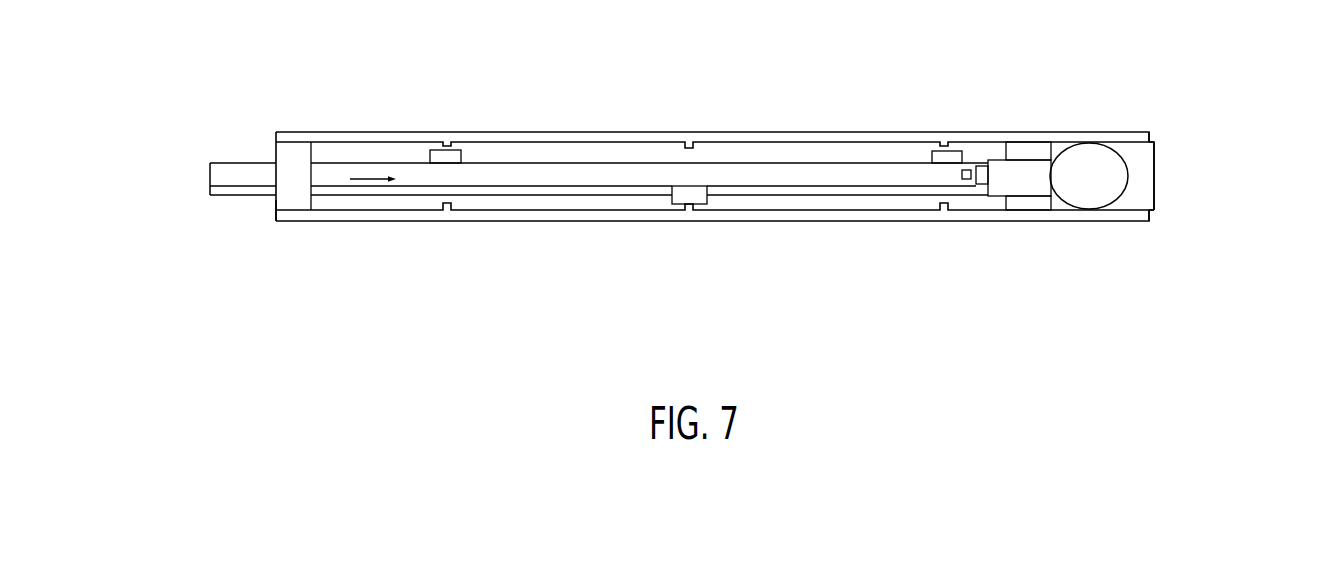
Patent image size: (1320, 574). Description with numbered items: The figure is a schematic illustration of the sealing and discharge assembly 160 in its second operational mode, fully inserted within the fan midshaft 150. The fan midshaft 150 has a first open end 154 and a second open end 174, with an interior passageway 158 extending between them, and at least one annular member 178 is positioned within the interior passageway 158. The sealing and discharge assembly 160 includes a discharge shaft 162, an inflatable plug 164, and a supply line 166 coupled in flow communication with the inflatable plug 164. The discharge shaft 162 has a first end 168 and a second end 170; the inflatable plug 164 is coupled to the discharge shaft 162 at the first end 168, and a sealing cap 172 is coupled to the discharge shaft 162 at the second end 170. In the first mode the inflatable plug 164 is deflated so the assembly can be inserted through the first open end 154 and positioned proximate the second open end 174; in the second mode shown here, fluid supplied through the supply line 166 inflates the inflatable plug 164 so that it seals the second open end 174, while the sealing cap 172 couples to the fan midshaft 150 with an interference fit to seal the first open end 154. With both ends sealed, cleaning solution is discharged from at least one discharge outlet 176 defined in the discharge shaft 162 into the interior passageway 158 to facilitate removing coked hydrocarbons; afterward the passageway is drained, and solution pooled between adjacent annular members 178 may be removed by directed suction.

The fan midshaft 150 is at (1129, 131).
The first open end 154 is at (272, 128).
The interior passageway 158 is at (790, 150).
The sealing and discharge assembly 160 is at (219, 133).
The discharge shaft 162 is at (250, 163).
The inflatable plug 164 is at (1128, 175).
The supply line 166 is at (229, 197).
The first end 168 is at (1043, 105).
The second end 170 is at (314, 118).
The sealing cap 172 is at (274, 205).
The second open end 174 is at (1180, 137).
The discharge outlet 176 is at (967, 168).
The annular member 178 is at (452, 208).